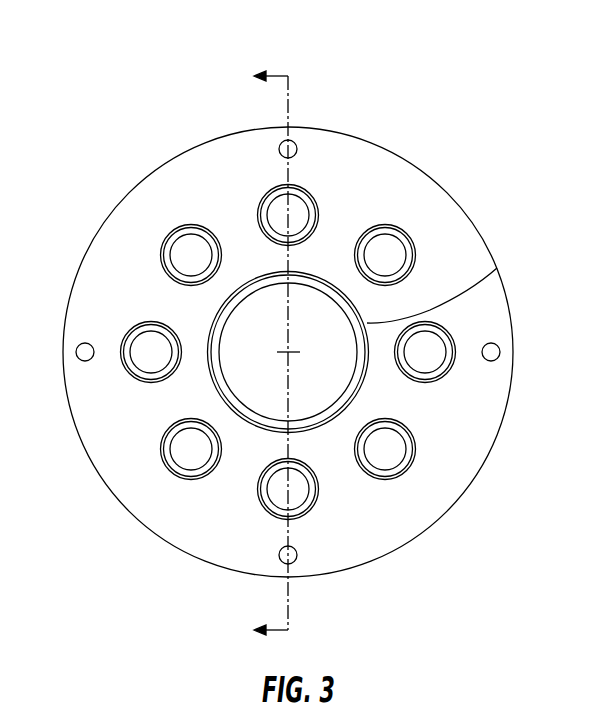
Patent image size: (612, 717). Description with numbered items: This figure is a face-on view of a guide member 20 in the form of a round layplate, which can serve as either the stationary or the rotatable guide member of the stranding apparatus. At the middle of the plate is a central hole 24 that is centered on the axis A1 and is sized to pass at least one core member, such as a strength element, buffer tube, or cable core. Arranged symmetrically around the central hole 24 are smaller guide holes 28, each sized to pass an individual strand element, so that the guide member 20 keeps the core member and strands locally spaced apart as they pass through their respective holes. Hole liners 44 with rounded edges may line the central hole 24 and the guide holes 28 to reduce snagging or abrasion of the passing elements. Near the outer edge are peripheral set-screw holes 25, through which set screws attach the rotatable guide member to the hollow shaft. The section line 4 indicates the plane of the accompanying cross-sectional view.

The guide member 20 is at (188, 106).
The central hole 24 is at (312, 310).
The peripheral set-screw holes 25 is at (298, 152).
The guide holes 28 is at (378, 257).
The hole liners 44 is at (417, 248).
The axis A1 is at (293, 357).
The section line 4- 4 is at (260, 357).